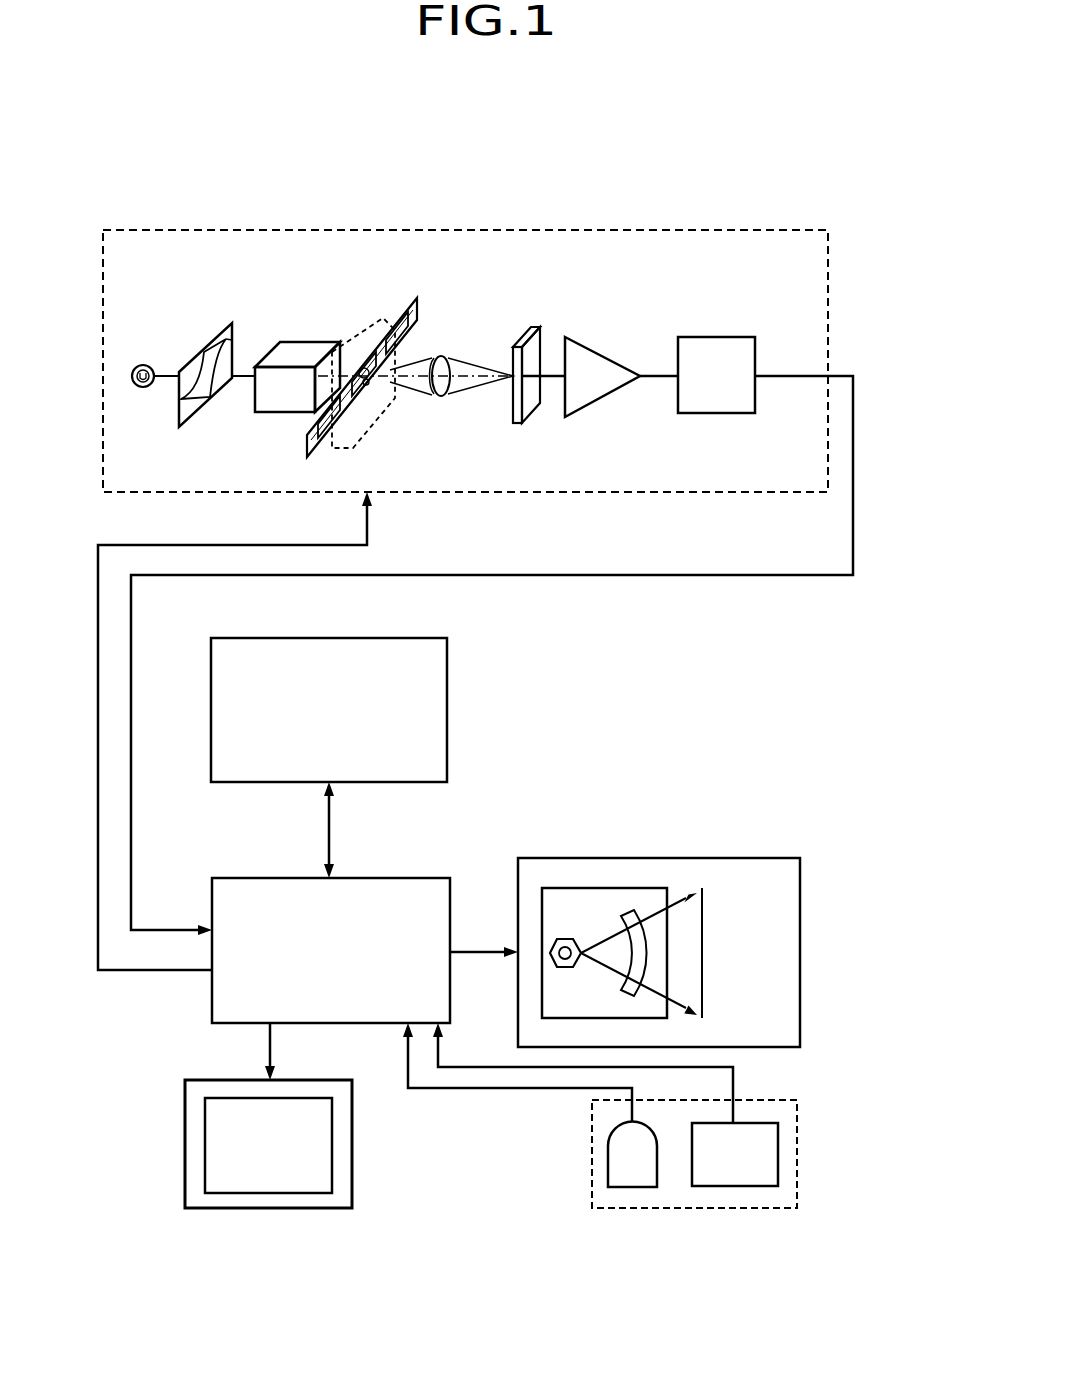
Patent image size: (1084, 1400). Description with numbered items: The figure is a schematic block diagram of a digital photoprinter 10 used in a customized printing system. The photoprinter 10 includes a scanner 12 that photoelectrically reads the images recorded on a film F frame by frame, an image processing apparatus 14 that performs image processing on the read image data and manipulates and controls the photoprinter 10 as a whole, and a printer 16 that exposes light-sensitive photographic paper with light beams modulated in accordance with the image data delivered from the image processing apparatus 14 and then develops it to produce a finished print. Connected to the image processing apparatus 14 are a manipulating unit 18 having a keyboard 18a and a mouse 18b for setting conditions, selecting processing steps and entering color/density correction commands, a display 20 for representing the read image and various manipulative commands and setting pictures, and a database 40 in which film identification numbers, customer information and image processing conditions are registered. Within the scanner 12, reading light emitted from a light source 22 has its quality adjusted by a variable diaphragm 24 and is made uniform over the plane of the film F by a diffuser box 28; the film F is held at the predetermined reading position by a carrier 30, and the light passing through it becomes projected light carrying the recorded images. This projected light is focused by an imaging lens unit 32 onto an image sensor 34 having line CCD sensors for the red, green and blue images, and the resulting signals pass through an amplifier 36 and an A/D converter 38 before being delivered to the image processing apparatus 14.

The digital photoprinter 10 is at (655, 216).
The scanner 12 is at (307, 230).
The image processing apparatus 14 is at (408, 877).
The printer 16 is at (655, 857).
The manipulating unit 18 is at (680, 1209).
The keyboard 18a is at (740, 1187).
The mouse 18b is at (628, 1188).
The display 20 is at (259, 1209).
The light source 22 is at (143, 365).
The variable diaphragm 24 is at (210, 334).
The diffuser box 28 is at (293, 366).
The carrier 30 is at (383, 412).
The imaging lens unit 32 is at (440, 357).
The image sensor 34 is at (532, 348).
The amplifier 36 is at (604, 398).
The A/D converter 38 is at (740, 336).
The database 40 is at (449, 697).
The film F is at (406, 318).